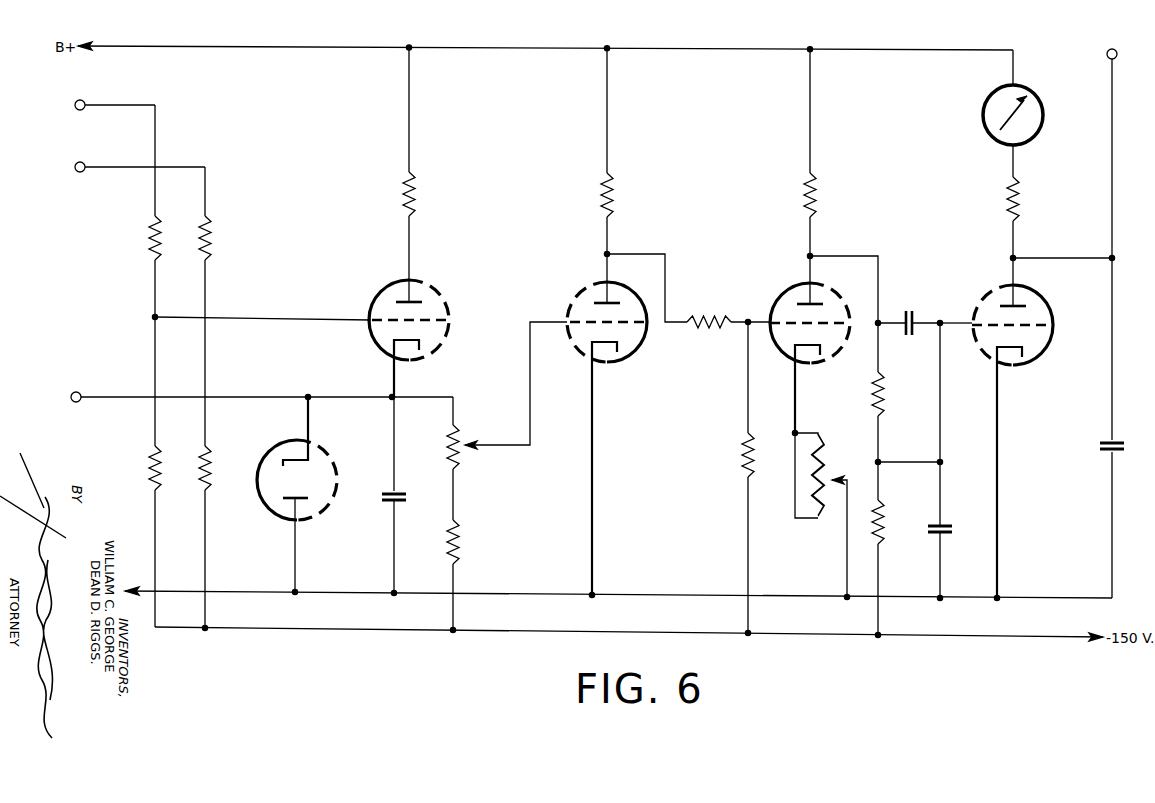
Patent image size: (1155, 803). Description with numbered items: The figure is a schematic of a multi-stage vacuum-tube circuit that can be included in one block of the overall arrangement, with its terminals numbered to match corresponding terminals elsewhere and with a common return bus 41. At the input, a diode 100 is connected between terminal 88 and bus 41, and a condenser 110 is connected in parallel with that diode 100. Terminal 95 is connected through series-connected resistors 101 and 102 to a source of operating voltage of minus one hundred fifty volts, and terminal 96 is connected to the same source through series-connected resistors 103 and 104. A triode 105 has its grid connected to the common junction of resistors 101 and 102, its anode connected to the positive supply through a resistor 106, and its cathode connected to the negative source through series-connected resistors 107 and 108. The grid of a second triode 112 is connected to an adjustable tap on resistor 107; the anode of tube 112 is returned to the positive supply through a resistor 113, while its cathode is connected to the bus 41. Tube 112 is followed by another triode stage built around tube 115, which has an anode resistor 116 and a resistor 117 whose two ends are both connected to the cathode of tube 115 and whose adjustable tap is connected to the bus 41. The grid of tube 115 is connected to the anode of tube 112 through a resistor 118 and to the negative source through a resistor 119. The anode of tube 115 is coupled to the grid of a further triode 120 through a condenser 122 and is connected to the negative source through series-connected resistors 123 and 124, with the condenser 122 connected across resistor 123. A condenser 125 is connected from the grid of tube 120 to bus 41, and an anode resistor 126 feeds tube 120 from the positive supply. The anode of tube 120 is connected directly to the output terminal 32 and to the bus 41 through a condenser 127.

The terminal 32 is at (1107, 54).
The bus 41 is at (505, 590).
The terminal 88 is at (80, 392).
The terminal 95 is at (84, 100).
The terminal 96 is at (84, 162).
The diode 100 is at (276, 510).
The resistor 101 is at (150, 243).
The resistor 102 is at (150, 478).
The resistor 103 is at (210, 256).
The resistor 104 is at (210, 474).
The triode 105 is at (414, 290).
The resistor 106 is at (414, 200).
The resistor 107 is at (452, 446).
The resistor 108 is at (452, 556).
The condenser 110 is at (386, 496).
The triode 112 is at (626, 358).
The resistor 113 is at (612, 201).
The triode 115 is at (822, 294).
The anode resistor 116 is at (815, 201).
The resistor 117 is at (824, 470).
The resistor 118 is at (710, 318).
The resistor 119 is at (744, 458).
The triode 120 is at (1035, 293).
The condenser 122 is at (911, 316).
The resistor 123 is at (884, 392).
The resistor 124 is at (883, 524).
The condenser 125 is at (948, 532).
The anode resistor 126 is at (1018, 203).
The condenser 127 is at (1104, 452).